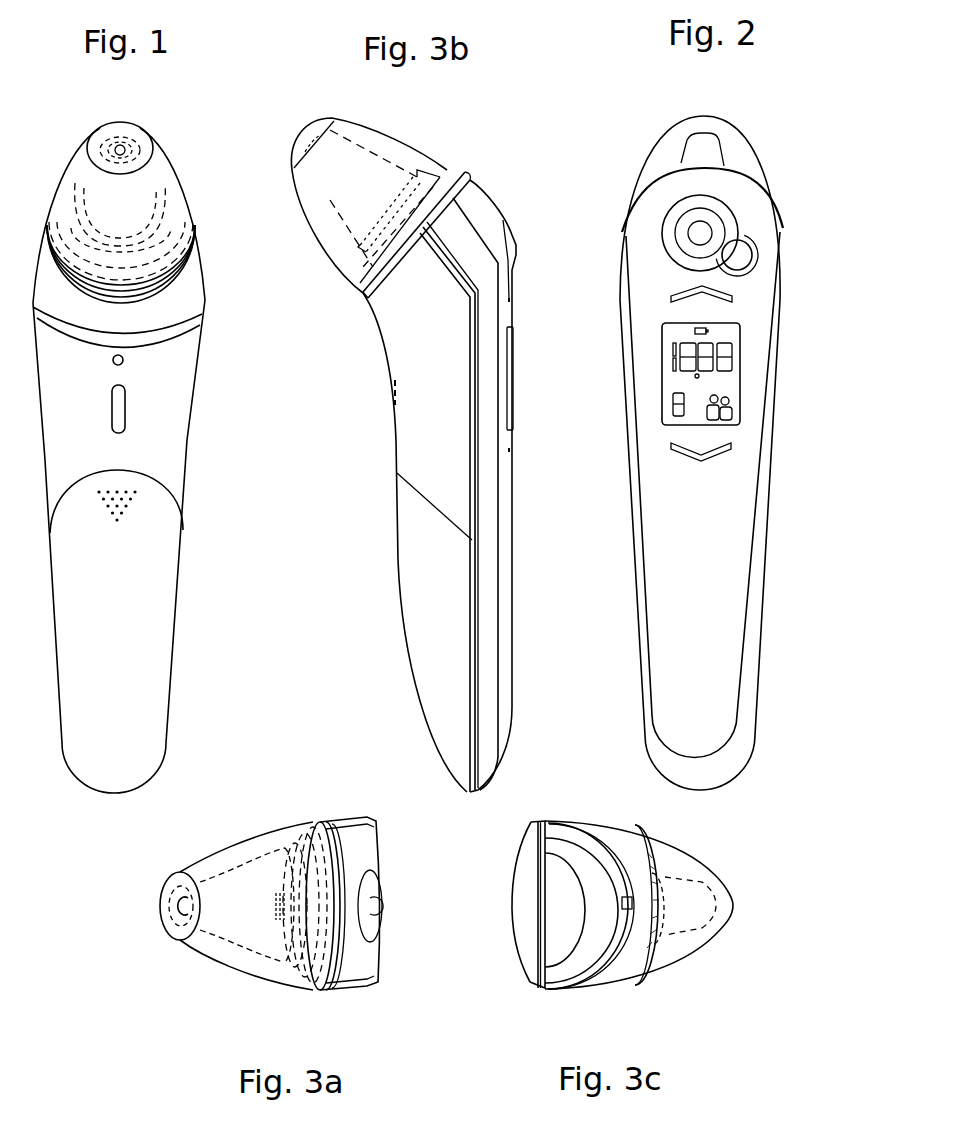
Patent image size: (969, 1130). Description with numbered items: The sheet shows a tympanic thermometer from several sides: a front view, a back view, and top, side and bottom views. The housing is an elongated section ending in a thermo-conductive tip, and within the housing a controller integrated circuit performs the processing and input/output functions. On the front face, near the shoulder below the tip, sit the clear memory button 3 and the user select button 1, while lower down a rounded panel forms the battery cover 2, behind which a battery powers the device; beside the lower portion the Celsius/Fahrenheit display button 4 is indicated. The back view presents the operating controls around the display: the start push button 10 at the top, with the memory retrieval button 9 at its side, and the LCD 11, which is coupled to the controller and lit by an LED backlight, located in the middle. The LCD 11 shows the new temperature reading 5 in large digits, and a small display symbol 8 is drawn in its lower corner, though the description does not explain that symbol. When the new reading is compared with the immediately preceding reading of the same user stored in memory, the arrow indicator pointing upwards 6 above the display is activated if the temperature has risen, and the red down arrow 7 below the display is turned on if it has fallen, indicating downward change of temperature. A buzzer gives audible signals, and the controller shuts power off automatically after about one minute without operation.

In FIG. 1, the user select button 1 is at (130, 433).
In FIG. 1, the battery cover 2 is at (138, 528).
In FIG. 1, the clear memory button 3 is at (125, 360).
In FIG. 1, the Celsius/Fahrenheit display button 4 is at (153, 688).
In FIG. 2, the new temperature reading 5 is at (735, 348).
In FIG. 2, the arrow indicator pointing upwards 6 is at (738, 293).
In FIG. 2, the down arrow 7 is at (743, 450).
In FIG. 2, the mode icon 8 is at (733, 403).
In FIG. 2, the memory retrieval button 9 is at (753, 245).
In FIG. 2, the start push button 10 is at (745, 206).
In FIG. 2, the LCD 11 is at (665, 410).